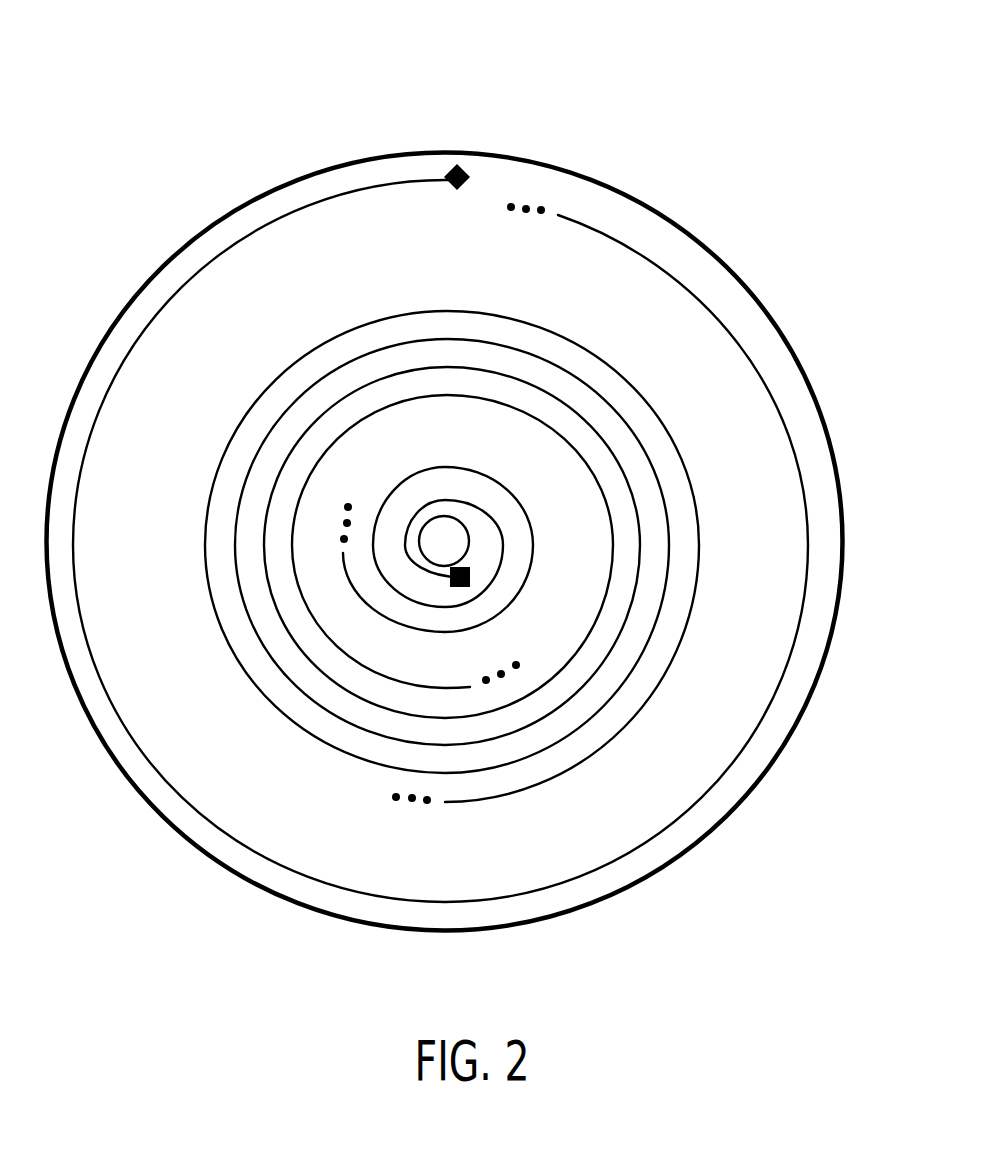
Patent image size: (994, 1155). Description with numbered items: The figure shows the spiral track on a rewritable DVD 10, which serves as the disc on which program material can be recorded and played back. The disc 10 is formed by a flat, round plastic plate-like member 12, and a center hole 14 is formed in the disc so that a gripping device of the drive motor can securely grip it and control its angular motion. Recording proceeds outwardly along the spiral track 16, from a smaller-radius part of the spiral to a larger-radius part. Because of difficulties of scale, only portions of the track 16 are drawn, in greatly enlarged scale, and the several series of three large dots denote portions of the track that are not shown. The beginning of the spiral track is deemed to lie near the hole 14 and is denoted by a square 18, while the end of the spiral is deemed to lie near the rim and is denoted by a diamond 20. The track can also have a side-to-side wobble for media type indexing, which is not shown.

The rewritable DVD 10 is at (458, 36).
The plate-like member 12 is at (603, 183).
The center hole 14 is at (469, 546).
The spiral track 16 is at (272, 425).
The square 18 is at (470, 578).
The diamond 20 is at (452, 163).